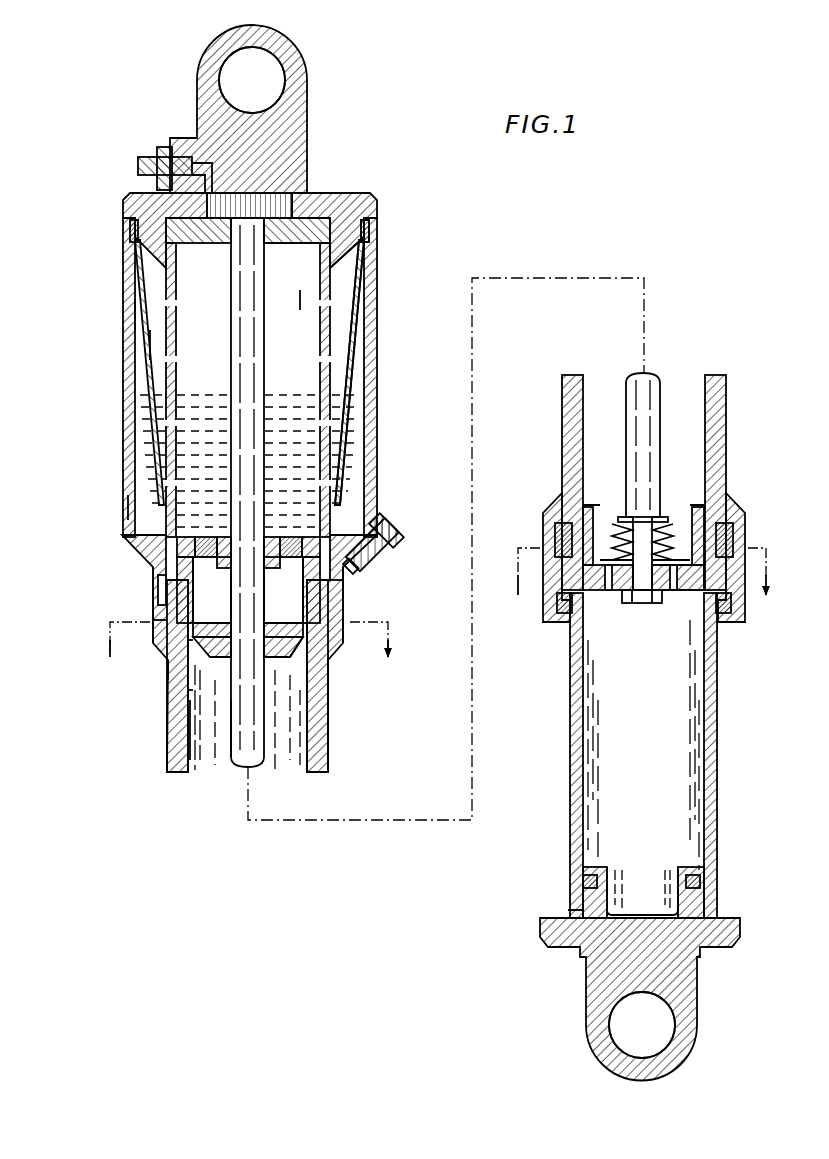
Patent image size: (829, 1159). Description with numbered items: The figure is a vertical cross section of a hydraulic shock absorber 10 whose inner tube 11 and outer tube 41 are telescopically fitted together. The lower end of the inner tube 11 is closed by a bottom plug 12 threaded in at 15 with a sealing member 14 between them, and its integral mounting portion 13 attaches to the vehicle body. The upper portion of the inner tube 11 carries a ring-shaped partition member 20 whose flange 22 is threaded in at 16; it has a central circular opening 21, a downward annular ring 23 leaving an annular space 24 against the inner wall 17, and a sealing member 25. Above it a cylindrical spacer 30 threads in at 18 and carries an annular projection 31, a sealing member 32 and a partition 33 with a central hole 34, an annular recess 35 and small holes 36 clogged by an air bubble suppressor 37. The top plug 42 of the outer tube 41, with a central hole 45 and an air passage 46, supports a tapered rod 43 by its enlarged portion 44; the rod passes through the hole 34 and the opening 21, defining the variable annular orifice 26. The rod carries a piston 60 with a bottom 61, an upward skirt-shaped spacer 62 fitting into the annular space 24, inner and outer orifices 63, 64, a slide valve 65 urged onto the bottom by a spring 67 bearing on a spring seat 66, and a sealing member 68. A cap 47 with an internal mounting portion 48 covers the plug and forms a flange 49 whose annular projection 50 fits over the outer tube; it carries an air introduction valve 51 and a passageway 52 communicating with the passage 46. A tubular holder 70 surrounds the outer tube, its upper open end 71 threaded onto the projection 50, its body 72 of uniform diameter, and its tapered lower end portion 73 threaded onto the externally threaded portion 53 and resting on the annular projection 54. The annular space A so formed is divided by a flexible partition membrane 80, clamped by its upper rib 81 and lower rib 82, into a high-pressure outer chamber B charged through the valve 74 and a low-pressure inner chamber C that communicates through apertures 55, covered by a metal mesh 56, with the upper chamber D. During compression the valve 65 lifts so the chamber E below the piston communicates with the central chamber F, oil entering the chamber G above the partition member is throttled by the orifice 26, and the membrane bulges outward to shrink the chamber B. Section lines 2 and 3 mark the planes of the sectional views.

The hydraulic shock absorber 10 is at (330, 737).
The inner tube 11 is at (718, 750).
The bottom plug 12 is at (680, 978).
The mounting portion 13 is at (618, 1028).
The sealing member 14 is at (697, 880).
The threaded connection 15 is at (572, 912).
The threaded engagement 16 is at (322, 633).
The inner wall 17 is at (200, 718).
The threaded engagement 18 is at (336, 612).
The partition member 20 is at (285, 624).
The central circular opening 21 is at (242, 648).
The flange 22 is at (183, 644).
The annular ring 23 is at (195, 720).
The annular space 24 is at (306, 642).
The sealing member 25 is at (202, 680).
The annular orifice 26 is at (258, 628).
The cylindrical spacer 30 is at (372, 494).
The annular projection 31 is at (160, 568).
The sealing member 32 is at (345, 575).
The partition 33 is at (200, 565).
The central hole 34 is at (250, 495).
The annular recess 35 is at (290, 536).
The small holes 36 is at (172, 588).
The air bubble suppressor 37 is at (206, 536).
The outer tube 41 is at (166, 762).
The top plug 42 is at (292, 235).
The rod 43 is at (262, 736).
The enlarged portion 44 is at (303, 145).
The central hole 45 is at (249, 216).
The air passage 46 is at (212, 235).
The cap 47 is at (292, 208).
The internal mounting portion 48 is at (272, 70).
The flange 49 is at (355, 205).
The annular projection 50 is at (352, 266).
The air introduction valve 51 is at (145, 160).
The passageway 52 is at (203, 165).
The externally threaded portion 53 is at (152, 614).
The annular projection 54 is at (180, 660).
The apertures 55 is at (166, 398).
The mesh 56 is at (168, 300).
The piston 60 is at (684, 590).
The bottom 61 is at (618, 588).
The skirt-shaped spacer 62 is at (598, 520).
The inner orifices 63 is at (664, 592).
The outer orifices 64 is at (597, 580).
The slide valve 65 is at (677, 556).
The spring seat 66 is at (668, 520).
The spring 67 is at (674, 538).
The sealing member 68 is at (712, 648).
The tubular holder 70 is at (378, 322).
The upper open end 71 is at (378, 224).
The body 72 is at (137, 318).
The lower end portion 73 is at (126, 548).
The valve 74 is at (392, 565).
The partition membrane 80 is at (355, 420).
The upper rib 81 is at (372, 236).
The lower rib 82 is at (380, 540).
The section line 2- 2 is at (249, 659).
The section line 3- 3 is at (643, 591).
The annular space A is at (150, 270).
The outer chamber B is at (132, 492).
The inner chamber C is at (152, 333).
The upper chamber D is at (296, 302).
The chamber below piston E is at (600, 773).
The central chamber F is at (205, 757).
The chamber above partition member G is at (200, 433).